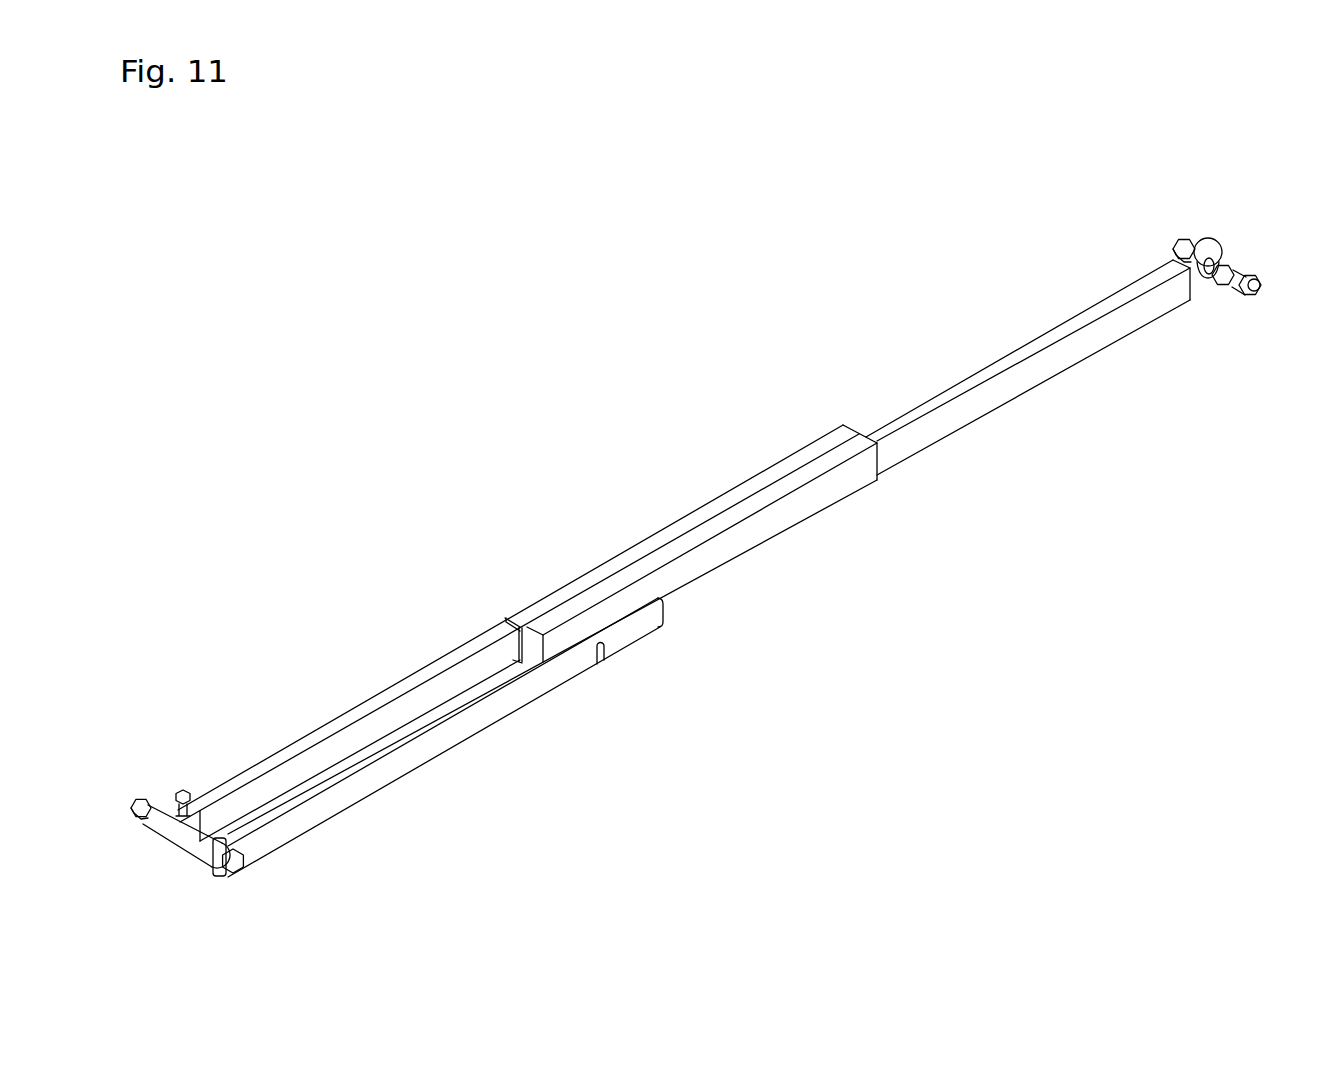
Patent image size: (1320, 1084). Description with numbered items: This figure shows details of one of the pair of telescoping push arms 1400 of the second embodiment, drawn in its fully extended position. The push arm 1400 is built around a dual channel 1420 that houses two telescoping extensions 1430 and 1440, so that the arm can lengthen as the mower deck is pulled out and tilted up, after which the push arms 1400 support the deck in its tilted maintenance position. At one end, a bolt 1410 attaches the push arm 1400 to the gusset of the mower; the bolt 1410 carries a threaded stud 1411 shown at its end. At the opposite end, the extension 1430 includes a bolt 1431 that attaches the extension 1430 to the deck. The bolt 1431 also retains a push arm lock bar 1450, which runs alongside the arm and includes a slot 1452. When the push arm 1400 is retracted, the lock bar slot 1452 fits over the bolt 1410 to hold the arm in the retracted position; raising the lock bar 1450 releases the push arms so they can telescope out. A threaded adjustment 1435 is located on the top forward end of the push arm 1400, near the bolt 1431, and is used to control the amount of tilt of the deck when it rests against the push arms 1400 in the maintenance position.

The telescoping push arm 1400 is at (633, 390).
The bolt 1410 is at (1233, 266).
The stud 1411 is at (1242, 297).
The dual channel 1420 is at (770, 520).
The telescoping extension 1430 is at (427, 677).
The bolt 1431 is at (134, 816).
The threaded adjustment 1435 is at (181, 791).
The telescoping extension 1440 is at (967, 407).
The push arm lock bar 1450 is at (398, 762).
The slot 1452 is at (603, 662).